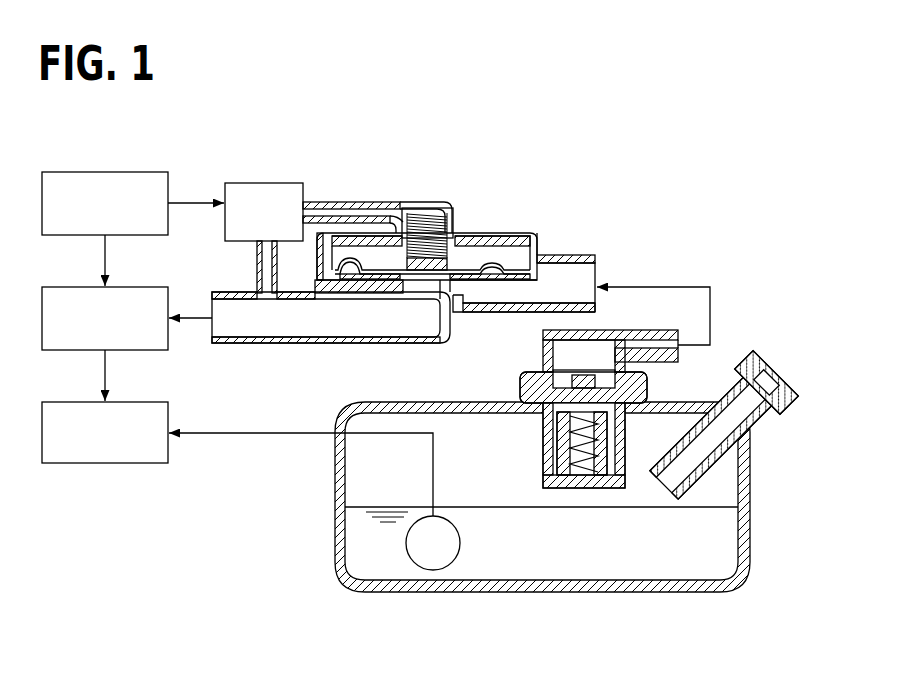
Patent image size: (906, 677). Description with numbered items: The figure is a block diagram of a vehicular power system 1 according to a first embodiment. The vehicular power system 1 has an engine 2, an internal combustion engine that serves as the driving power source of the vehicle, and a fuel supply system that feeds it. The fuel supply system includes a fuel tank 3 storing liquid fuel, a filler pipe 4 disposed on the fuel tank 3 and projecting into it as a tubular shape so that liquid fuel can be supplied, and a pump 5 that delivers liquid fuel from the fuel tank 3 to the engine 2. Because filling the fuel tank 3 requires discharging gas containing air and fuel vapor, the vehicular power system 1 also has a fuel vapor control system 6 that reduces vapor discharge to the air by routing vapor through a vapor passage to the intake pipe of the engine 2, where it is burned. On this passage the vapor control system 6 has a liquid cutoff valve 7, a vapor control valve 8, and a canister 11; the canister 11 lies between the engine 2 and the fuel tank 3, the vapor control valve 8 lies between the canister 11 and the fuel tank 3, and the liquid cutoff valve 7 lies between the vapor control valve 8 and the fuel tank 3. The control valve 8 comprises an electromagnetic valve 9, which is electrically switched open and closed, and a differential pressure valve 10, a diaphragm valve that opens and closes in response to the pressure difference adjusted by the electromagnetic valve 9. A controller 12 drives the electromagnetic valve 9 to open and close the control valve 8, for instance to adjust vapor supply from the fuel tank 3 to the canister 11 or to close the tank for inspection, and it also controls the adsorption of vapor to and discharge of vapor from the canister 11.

The vehicular power system 1 is at (712, 207).
The engine 2 is at (128, 402).
The fuel tank 3 is at (430, 401).
The filler pipe 4 is at (672, 445).
The pump 5 is at (407, 545).
The fuel vapor control system 6 is at (608, 207).
The liquid cutoff valve 7 is at (617, 329).
The vapor control valve 8 is at (470, 207).
The electromagnetic valve 9 is at (253, 183).
The differential pressure valve 10 is at (512, 230).
The canister 11 is at (128, 287).
The controller 12 is at (128, 172).